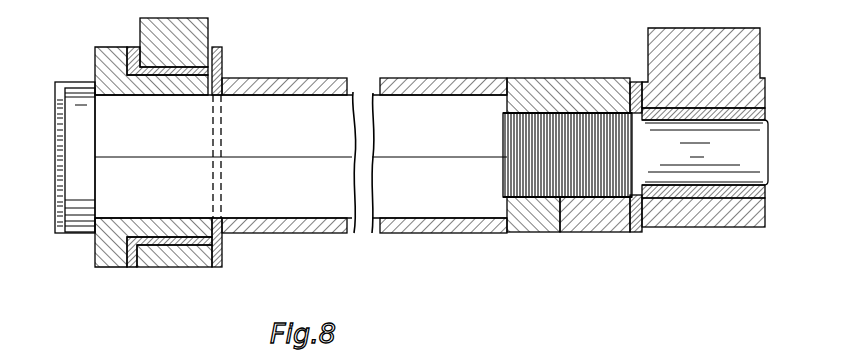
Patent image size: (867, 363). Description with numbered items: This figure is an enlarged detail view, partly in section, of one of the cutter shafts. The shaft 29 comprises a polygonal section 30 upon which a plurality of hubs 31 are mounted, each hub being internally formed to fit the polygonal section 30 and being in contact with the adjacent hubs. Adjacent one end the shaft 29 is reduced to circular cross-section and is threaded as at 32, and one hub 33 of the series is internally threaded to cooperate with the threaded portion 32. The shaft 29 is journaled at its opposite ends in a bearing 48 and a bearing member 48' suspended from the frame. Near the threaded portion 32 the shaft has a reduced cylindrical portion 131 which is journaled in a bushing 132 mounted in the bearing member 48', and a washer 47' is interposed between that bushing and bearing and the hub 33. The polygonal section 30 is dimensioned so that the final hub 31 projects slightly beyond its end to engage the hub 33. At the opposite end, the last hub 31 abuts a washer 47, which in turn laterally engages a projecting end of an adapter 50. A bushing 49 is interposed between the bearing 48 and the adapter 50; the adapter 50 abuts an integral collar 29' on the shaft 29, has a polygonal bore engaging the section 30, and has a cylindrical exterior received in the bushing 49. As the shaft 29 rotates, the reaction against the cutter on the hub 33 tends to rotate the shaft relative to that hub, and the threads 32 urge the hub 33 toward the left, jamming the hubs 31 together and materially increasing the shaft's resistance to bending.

The shaft 29 is at (421, 183).
The integral collar 29' is at (64, 175).
The polygonal section 30 is at (468, 203).
The hubs 31 is at (266, 229).
The threaded portion 32 is at (557, 236).
The hub 33 is at (600, 231).
The washer 47 is at (245, 153).
The washer 47' is at (646, 183).
The bearing 48 is at (174, 160).
The bearing member 48' is at (703, 153).
The bushing 49 is at (131, 258).
The adapter 50 is at (113, 253).
The reduced cylindrical portion 131 is at (750, 159).
The bushing 132 is at (762, 108).